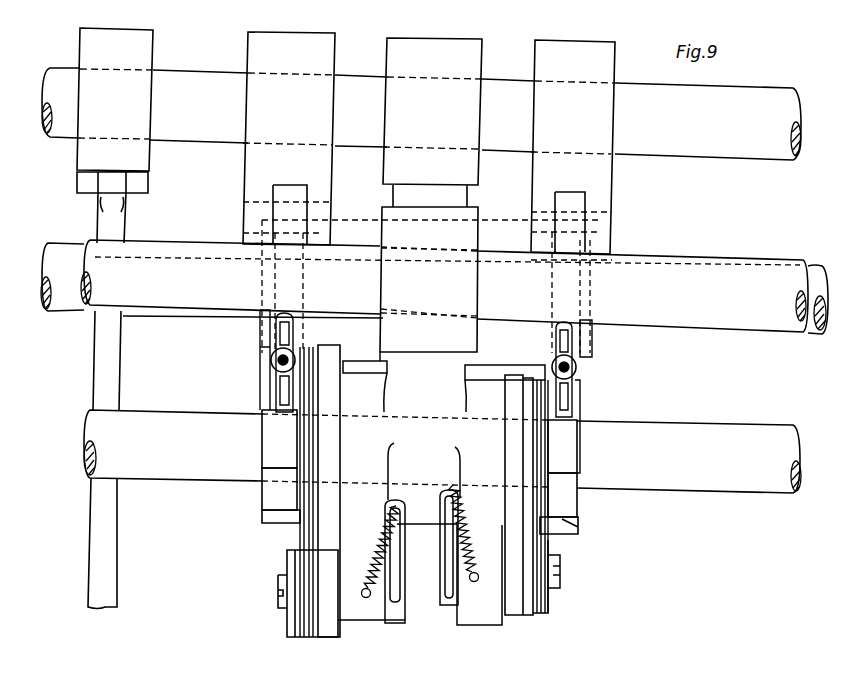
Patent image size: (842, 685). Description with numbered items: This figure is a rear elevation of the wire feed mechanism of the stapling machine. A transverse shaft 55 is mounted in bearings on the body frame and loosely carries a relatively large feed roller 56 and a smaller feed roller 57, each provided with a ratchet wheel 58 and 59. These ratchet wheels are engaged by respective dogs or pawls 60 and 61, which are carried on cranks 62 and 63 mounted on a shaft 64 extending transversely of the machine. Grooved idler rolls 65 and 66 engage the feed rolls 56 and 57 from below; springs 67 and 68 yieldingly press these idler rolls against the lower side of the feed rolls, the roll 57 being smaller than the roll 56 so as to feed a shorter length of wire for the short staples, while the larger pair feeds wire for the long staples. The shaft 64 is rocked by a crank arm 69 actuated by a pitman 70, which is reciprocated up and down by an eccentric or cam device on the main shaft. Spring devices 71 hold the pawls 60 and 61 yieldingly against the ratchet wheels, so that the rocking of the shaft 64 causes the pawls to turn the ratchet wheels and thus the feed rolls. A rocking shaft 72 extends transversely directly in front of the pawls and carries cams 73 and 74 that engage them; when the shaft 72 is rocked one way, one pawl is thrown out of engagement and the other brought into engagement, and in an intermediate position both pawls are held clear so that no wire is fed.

The transverse shaft 55 is at (707, 430).
The large feed roller 56 is at (275, 523).
The small feed roller 57 is at (573, 520).
The ratchet wheel 58 is at (270, 493).
The ratchet wheel 59 is at (570, 485).
The dog or pawl 60 is at (276, 428).
The dog or pawl 61 is at (563, 438).
The crank 62 is at (262, 172).
The crank 63 is at (588, 182).
The shaft 64 is at (757, 150).
The idler roll 65 is at (296, 620).
The idler roll 66 is at (540, 599).
The spring 67 is at (366, 590).
The spring 68 is at (470, 574).
The crank arm 69 is at (148, 104).
The pitman 70 is at (112, 370).
The spring device 71 is at (271, 360).
The rocking shaft 72 is at (750, 325).
The cam 73 is at (328, 320).
The cam 74 is at (507, 325).